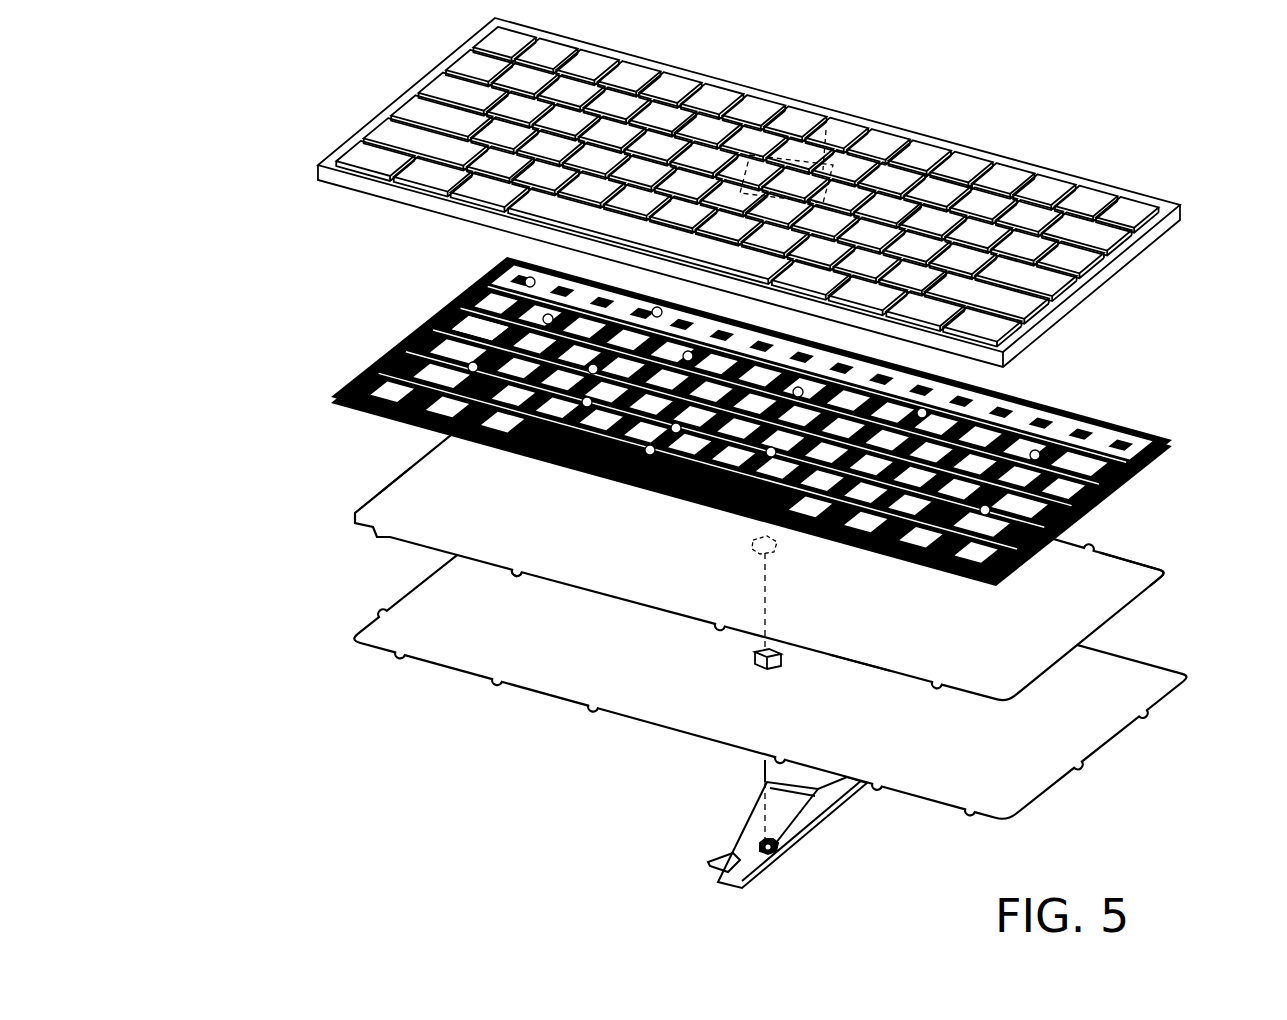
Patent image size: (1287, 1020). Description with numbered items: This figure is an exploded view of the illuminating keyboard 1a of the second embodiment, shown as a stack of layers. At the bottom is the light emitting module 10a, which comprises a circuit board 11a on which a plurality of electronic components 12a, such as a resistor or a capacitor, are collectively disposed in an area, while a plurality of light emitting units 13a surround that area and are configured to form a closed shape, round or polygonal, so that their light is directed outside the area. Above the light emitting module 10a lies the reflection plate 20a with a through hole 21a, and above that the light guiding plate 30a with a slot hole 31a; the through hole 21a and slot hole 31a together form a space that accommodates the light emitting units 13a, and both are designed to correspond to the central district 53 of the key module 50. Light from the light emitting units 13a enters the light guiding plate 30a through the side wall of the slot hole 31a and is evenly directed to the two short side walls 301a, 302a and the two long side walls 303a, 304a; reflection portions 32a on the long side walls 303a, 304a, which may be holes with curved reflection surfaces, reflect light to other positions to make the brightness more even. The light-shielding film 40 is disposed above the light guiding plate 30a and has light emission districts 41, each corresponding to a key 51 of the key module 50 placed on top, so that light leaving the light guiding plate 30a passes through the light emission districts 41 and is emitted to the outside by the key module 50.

The illuminating keyboard 1a is at (210, 104).
The key module 50 is at (430, 90).
The key 51 is at (786, 122).
The central district 53 is at (868, 108).
The light-shielding film 40 is at (412, 328).
The light emission district 41 is at (472, 310).
The light guiding plate 30a is at (392, 512).
The short side wall 301a is at (403, 478).
The short side wall 302a is at (1150, 590).
The long side wall 303a is at (860, 664).
The long side wall 304a is at (1125, 548).
The slot hole 31a is at (757, 537).
The reflection portion 32a is at (518, 568).
The reflection plate 20a is at (1150, 680).
The through hole 21a is at (748, 655).
The light emitting module 10a is at (693, 774).
The circuit board 11a is at (827, 802).
The electronic component 12a is at (772, 853).
The light emitting unit 13a is at (760, 845).